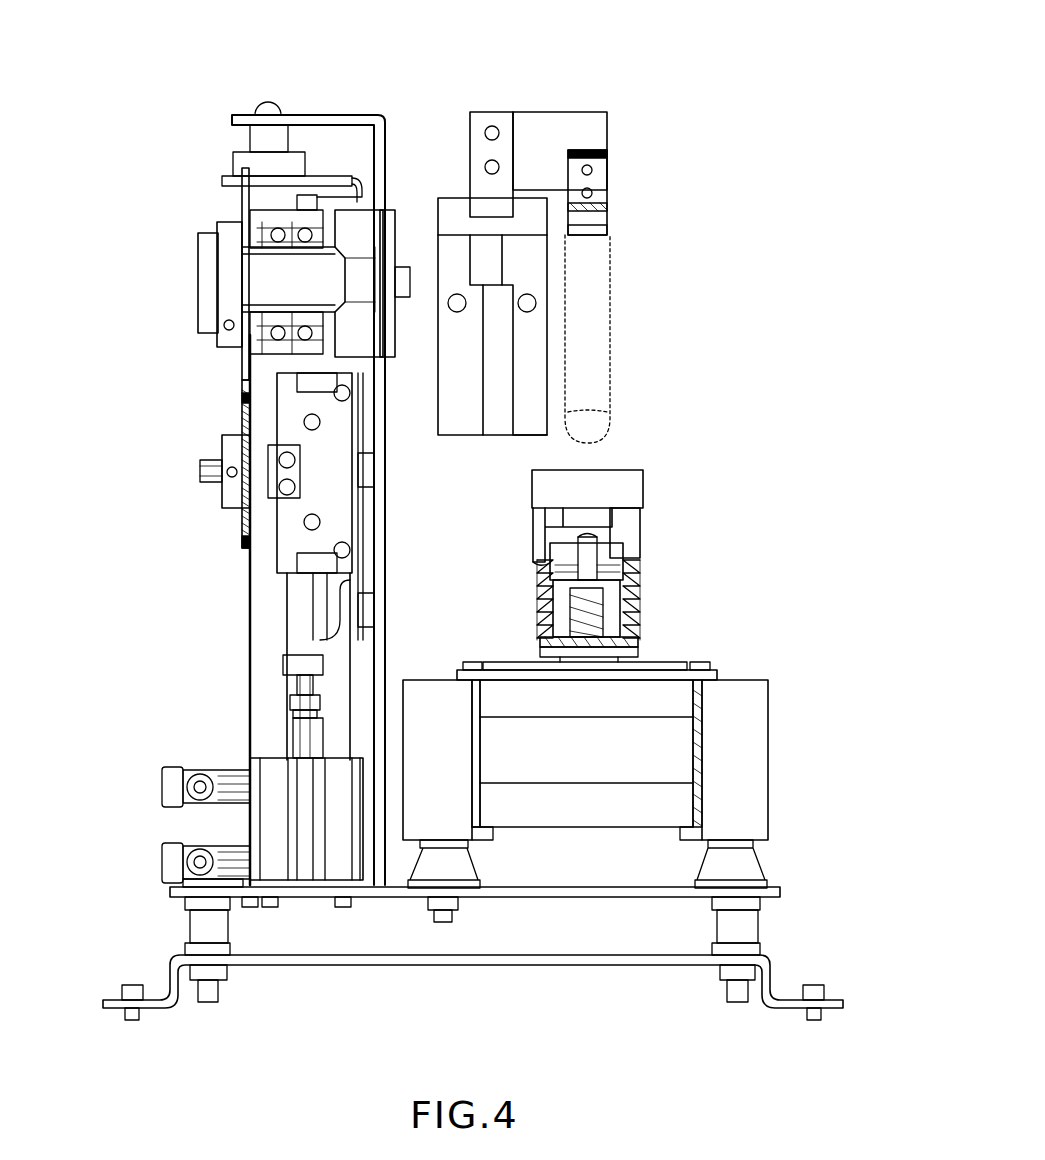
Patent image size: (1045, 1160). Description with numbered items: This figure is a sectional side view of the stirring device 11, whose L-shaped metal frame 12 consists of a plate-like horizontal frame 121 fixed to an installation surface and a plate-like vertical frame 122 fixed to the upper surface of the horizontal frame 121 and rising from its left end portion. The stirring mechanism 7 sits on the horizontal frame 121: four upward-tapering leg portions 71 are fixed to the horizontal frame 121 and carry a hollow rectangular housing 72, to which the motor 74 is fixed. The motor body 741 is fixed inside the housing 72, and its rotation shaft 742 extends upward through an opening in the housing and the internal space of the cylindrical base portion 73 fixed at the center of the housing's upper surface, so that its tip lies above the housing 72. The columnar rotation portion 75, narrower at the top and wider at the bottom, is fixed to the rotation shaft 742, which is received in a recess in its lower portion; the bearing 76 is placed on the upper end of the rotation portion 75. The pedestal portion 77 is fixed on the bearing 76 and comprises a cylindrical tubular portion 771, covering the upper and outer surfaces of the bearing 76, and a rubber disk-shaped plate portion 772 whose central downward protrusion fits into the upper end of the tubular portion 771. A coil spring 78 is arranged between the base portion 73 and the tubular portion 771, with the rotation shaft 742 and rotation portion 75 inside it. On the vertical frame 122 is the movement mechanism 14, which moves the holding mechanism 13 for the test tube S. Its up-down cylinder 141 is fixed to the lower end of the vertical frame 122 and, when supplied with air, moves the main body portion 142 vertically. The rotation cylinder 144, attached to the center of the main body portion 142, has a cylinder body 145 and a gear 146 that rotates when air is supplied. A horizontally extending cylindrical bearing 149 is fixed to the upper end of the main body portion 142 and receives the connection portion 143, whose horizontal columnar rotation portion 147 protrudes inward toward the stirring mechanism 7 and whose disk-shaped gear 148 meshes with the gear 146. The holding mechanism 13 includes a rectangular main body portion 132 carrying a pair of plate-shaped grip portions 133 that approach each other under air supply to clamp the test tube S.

The stirring mechanism 7 is at (747, 672).
The stirring device 11 is at (683, 110).
The frame 12 is at (395, 975).
The holding mechanism 13 is at (575, 108).
The movement mechanism 14 is at (282, 576).
The leg portion 71 is at (693, 866).
The housing 72 is at (770, 742).
The base portion 73 is at (540, 640).
The motor 74 is at (700, 735).
The rotation portion 75 is at (553, 590).
The bearing 76 is at (548, 532).
The pedestal portion 77 is at (605, 470).
The spring 78 is at (640, 600).
The horizontal frame 121 is at (787, 964).
The vertical frame 122 is at (397, 130).
The main body portion 132 is at (452, 198).
The grip portion 133 is at (500, 110).
The up-down cylinder 141 is at (278, 870).
The main body portion 142 is at (300, 643).
The connection portion 143 is at (205, 245).
The rotation cylinder 144 is at (225, 450).
The cylinder body 145 is at (248, 533).
The gear 146 is at (245, 420).
The rotation portion 147 is at (212, 257).
The gear 148 is at (243, 372).
The bearing 149 is at (245, 172).
The motor body 741 is at (690, 668).
The rotation shaft 742 is at (635, 622).
The tubular portion 771 is at (640, 520).
The plate portion 772 is at (625, 470).
The test tube S is at (620, 252).